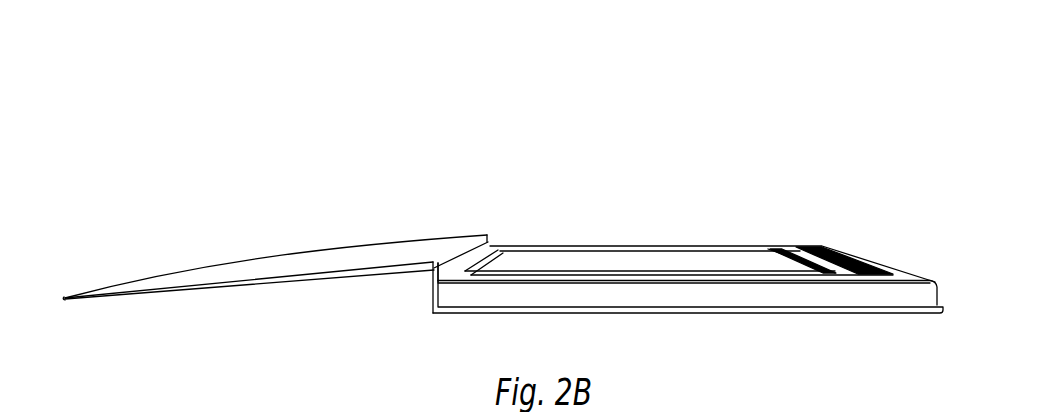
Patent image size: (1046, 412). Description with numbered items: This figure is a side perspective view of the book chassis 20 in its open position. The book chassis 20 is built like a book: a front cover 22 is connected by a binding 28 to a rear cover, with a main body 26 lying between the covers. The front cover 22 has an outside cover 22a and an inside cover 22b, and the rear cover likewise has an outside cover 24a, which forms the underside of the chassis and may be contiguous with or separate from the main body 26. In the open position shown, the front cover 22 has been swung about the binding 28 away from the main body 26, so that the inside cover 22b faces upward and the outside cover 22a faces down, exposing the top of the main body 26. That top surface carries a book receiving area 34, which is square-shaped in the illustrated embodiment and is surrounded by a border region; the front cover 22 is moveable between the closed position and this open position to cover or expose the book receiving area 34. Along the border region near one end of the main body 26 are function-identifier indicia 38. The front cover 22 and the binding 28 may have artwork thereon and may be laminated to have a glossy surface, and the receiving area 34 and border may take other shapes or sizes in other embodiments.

The book chassis 20 is at (249, 166).
The front cover 22 is at (214, 299).
The outside cover 22a is at (342, 278).
The inside cover 22b is at (278, 270).
The outside cover 24a is at (848, 312).
The main body 26 is at (685, 292).
The binding 28 is at (422, 293).
The book receiving area 34 is at (682, 262).
The function-identifier indicia 38 is at (848, 256).